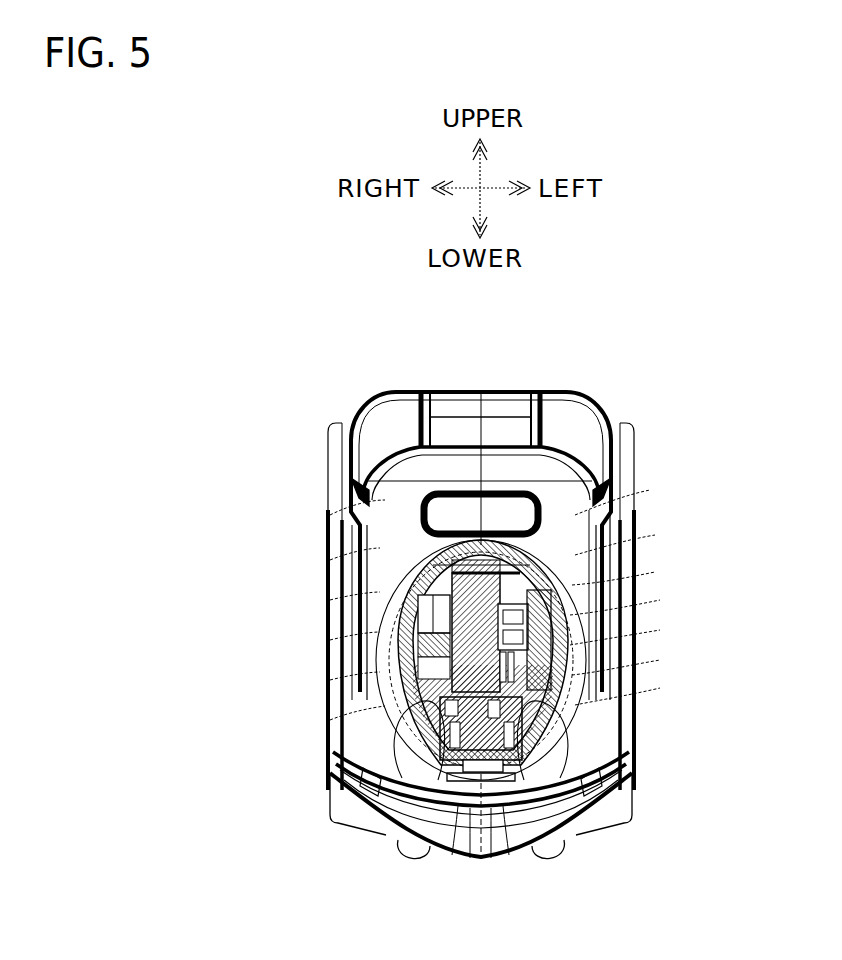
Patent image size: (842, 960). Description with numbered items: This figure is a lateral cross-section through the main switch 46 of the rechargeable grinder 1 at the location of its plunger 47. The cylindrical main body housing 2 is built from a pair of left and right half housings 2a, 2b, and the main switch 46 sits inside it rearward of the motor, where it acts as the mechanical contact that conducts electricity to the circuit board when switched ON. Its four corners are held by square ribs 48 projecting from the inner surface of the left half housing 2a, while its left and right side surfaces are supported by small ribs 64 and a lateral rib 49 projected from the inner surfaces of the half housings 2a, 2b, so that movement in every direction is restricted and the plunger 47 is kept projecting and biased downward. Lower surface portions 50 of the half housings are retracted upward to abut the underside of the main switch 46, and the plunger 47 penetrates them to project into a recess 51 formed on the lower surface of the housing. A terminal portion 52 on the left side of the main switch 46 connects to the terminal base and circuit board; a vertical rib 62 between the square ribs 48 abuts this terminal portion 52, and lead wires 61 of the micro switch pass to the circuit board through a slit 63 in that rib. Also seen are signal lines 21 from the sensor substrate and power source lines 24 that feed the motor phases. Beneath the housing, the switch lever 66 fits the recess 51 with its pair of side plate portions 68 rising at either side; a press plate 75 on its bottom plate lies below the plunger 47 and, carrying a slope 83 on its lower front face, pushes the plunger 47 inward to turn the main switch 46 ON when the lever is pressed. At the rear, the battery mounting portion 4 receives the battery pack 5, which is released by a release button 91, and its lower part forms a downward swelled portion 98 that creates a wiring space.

The rechargeable grinder 1 is at (555, 325).
The main body housing 2 is at (628, 534).
The left half housing 2a is at (640, 618).
The right half housing 2b is at (338, 613).
The battery mounting portion 4 is at (620, 460).
The battery pack 5 is at (597, 395).
The signal lines 21 is at (640, 727).
The power source lines 24 is at (640, 631).
The main switch 46 is at (352, 580).
The plunger 47 is at (457, 842).
The square ribs 48 is at (622, 508).
The lateral rib 49 is at (332, 503).
The lower surface portions 50 is at (327, 716).
The recess 51 is at (360, 810).
The terminal portion 52 is at (640, 663).
The lead wires 61 is at (633, 581).
The vertical rib 62 is at (633, 594).
The slit 63 is at (628, 558).
The small ribs 64 is at (640, 648).
The switch lever 66 is at (590, 830).
The side plate portions 68 is at (388, 833).
The press plate 75 is at (507, 862).
The slope 83 is at (478, 852).
The release button 91 is at (471, 400).
The swelled portion 98 is at (417, 857).